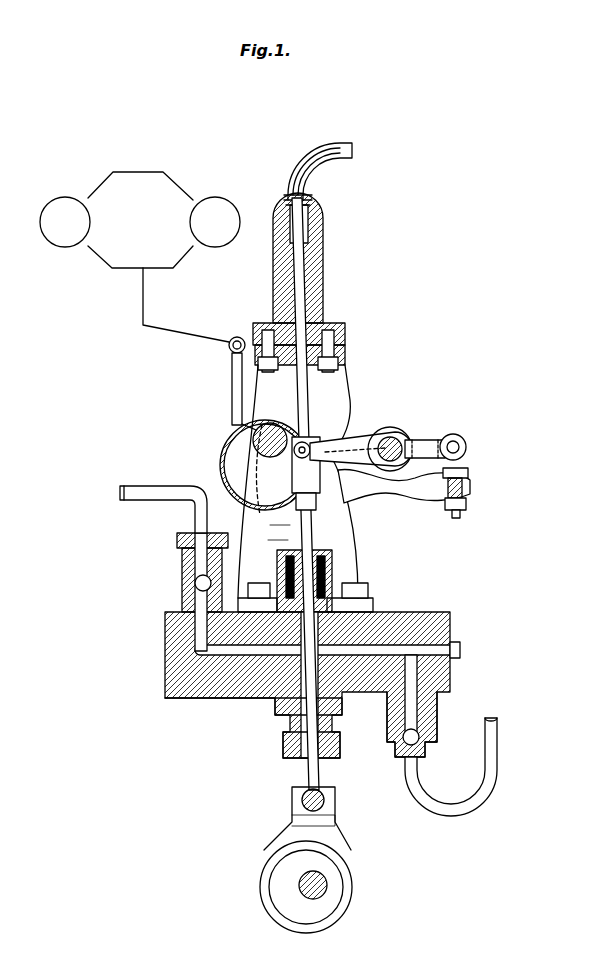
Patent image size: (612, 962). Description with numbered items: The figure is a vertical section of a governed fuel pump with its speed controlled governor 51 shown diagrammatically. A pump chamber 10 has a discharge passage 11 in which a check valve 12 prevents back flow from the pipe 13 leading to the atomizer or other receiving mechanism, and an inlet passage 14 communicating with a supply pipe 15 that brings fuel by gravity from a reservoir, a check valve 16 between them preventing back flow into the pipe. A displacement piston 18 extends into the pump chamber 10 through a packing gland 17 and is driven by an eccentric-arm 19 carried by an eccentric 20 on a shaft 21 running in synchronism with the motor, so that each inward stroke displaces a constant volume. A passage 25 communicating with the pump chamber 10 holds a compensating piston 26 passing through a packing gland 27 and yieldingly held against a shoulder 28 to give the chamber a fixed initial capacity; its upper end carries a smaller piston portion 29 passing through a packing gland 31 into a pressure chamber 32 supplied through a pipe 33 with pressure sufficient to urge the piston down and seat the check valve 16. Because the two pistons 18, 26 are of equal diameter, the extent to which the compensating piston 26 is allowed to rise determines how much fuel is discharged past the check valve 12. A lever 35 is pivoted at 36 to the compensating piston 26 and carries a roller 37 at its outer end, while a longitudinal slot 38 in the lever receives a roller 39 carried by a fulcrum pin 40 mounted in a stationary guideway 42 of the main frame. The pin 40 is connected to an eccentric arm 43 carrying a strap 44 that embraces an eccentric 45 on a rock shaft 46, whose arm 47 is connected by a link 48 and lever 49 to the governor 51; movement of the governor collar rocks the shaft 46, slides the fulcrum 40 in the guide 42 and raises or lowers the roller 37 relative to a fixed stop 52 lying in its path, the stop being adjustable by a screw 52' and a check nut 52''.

The pump chamber 10 is at (423, 650).
The discharge passage 11 is at (208, 604).
The check valve 12 is at (182, 580).
The pipe 13 is at (156, 493).
The inlet passage 14 is at (452, 679).
The supply pipe 15 is at (498, 776).
The check valve 16 is at (433, 724).
The packing gland 17 is at (284, 741).
The displacement piston 18 is at (278, 704).
The eccentric-arm 19 is at (334, 842).
The eccentric 20 is at (280, 879).
The shaft 21 is at (324, 882).
The passage 25 is at (346, 612).
The compensating piston 26 is at (308, 539).
The packing gland 27 is at (332, 563).
The shoulder 28 is at (247, 699).
The smaller piston portion 29 is at (326, 374).
The packing gland 31 is at (321, 302).
The pressure chamber 32 is at (322, 222).
The pipe 33 is at (356, 152).
The lever 35 is at (364, 433).
The pivot 36 is at (312, 435).
The roller 37 is at (462, 438).
The longitudinal slot 38 is at (372, 430).
The roller 39 is at (396, 437).
The fulcrum pin 40 is at (398, 466).
The stationary guideway 42 is at (421, 440).
The eccentric arm 43 is at (340, 470).
The strap 44 is at (226, 468).
The eccentric 45 is at (253, 483).
The rock shaft 46 is at (252, 440).
The arm 47 is at (258, 418).
The link 48 is at (230, 373).
The lever 49 is at (196, 335).
The speed controlled governor 51 is at (140, 220).
The fixed stop 52 is at (480, 464).
The screw 52' is at (491, 482).
The check nut 52'' is at (498, 501).